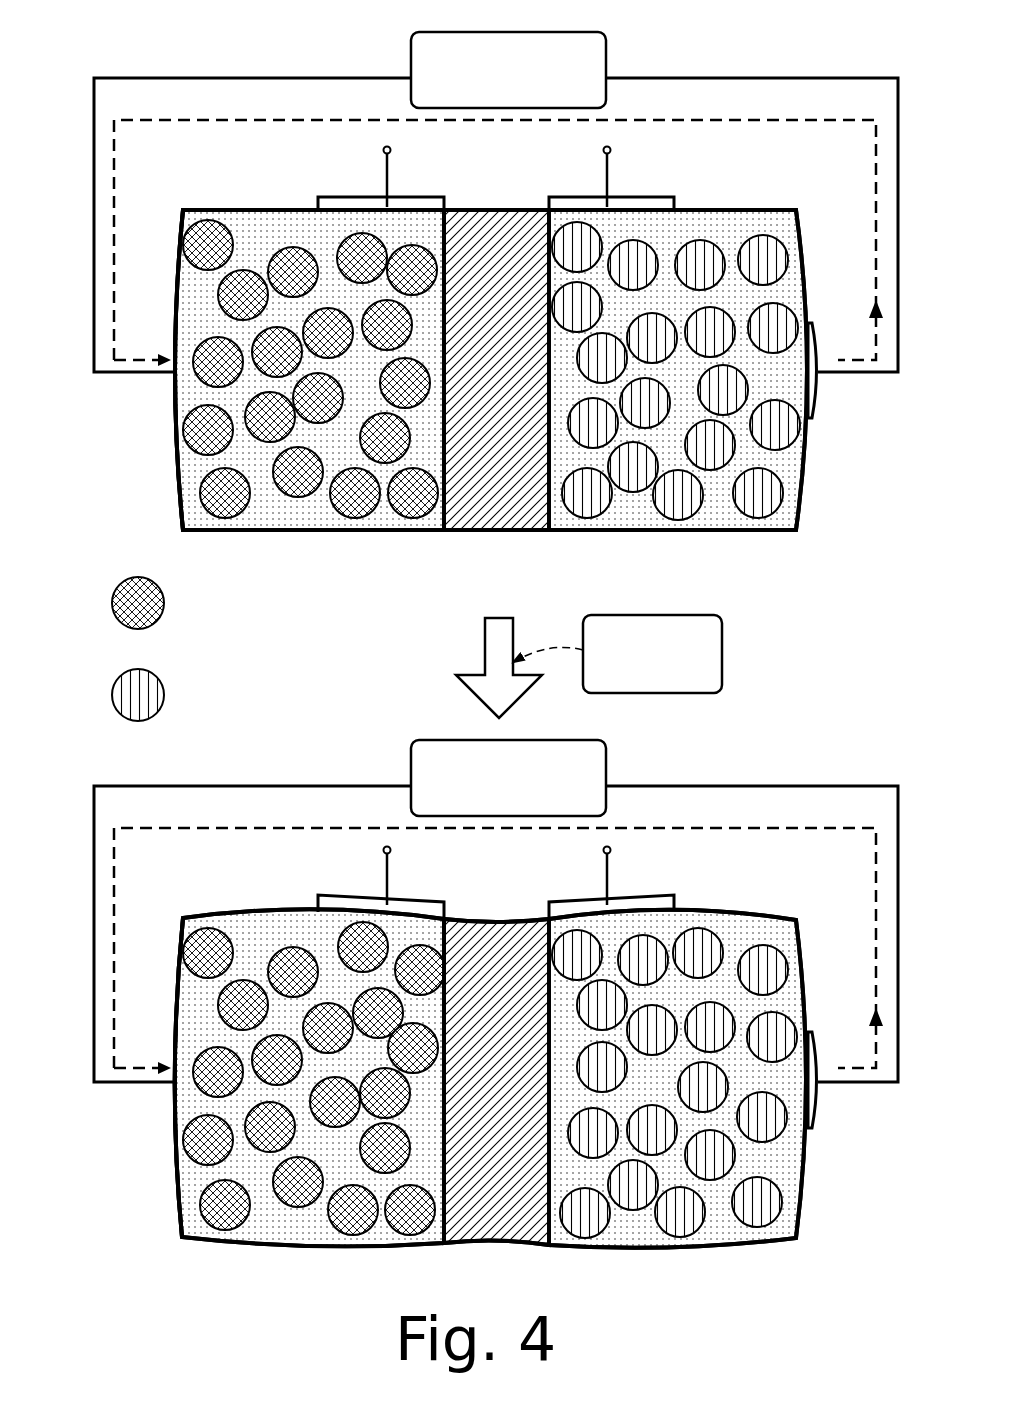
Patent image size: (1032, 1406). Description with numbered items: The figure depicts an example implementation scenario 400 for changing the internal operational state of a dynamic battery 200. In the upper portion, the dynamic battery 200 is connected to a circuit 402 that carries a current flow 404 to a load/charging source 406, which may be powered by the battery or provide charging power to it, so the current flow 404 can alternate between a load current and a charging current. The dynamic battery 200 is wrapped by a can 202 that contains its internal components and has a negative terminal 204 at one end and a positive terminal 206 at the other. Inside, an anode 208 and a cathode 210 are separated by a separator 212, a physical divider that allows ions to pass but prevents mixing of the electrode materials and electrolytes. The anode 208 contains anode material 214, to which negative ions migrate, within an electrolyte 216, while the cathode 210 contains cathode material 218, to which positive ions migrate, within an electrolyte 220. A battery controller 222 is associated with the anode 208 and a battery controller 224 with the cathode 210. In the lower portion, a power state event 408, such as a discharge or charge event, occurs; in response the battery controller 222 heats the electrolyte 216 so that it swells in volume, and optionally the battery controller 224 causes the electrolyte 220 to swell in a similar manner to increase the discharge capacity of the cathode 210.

The dynamic battery 200 is at (150, 270).
The can 202 is at (205, 212).
The negative terminal 204 is at (177, 450).
The positive terminal 206 is at (815, 385).
The anode 208 is at (442, 543).
The cathode 210 is at (794, 543).
The separator 212 is at (497, 212).
The anode material 214 is at (122, 584).
The electrolyte 216 is at (315, 242).
The cathode material 218 is at (122, 677).
The electrolyte 220 is at (726, 240).
The battery controller 222 is at (375, 205).
The battery controller 224 is at (582, 205).
The implementation scenario 400 is at (118, 44).
The circuit 402 is at (814, 76).
The current flow 404 is at (228, 118).
The load/charging source 406 is at (508, 424).
The power state event 408 is at (589, 666).